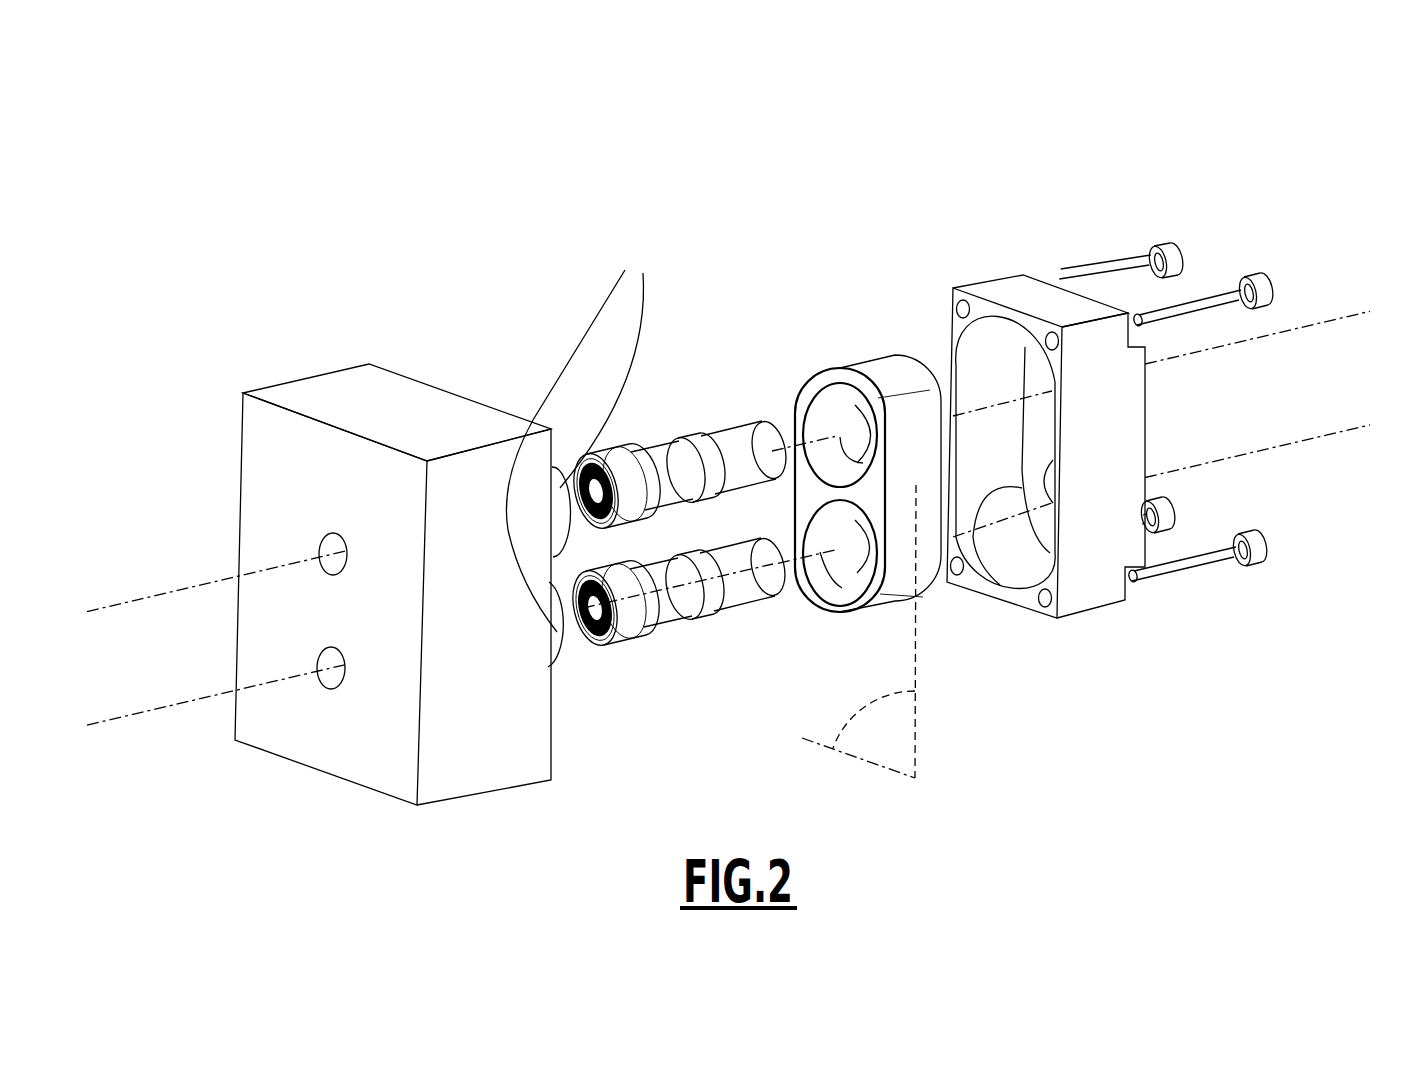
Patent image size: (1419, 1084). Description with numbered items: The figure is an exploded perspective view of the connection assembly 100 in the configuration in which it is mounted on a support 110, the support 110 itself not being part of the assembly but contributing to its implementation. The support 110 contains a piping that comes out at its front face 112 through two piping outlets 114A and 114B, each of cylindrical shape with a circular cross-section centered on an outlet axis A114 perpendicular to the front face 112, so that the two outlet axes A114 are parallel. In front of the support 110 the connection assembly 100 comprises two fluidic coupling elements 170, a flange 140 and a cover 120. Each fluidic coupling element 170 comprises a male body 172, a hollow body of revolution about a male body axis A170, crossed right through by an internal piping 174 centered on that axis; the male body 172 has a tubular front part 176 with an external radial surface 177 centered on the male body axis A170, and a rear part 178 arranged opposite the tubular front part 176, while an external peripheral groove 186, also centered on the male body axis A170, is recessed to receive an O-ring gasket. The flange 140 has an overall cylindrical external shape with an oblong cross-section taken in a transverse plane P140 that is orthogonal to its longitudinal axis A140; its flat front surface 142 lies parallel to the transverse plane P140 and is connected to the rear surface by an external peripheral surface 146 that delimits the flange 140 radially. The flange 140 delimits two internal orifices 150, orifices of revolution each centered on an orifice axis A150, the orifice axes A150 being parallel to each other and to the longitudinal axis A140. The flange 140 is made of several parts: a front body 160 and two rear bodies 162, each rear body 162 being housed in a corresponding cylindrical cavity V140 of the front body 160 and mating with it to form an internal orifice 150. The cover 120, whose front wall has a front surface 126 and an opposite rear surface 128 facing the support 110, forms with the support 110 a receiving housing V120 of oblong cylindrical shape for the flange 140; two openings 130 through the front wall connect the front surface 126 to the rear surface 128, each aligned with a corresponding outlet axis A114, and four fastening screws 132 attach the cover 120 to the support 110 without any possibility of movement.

The connection assembly 100 is at (515, 155).
The support 110 is at (312, 394).
The front face 112 is at (414, 374).
The piping outlet 114A is at (315, 549).
The piping outlet 114B is at (315, 660).
The outlet axis A114 is at (700, 526).
The cover 120 is at (1020, 283).
The front surface 126 is at (1150, 422).
The rear surface 128 is at (1037, 430).
The openings 130 is at (963, 575).
The fastening screws 132 is at (1257, 280).
The flange 140 is at (593, 233).
The front surface 142 is at (908, 357).
The external peripheral surface 146 is at (885, 370).
The internal orifices 150 is at (858, 422).
The front body 160 is at (850, 354).
The rear bodies 162 is at (582, 449).
The fluidic coupling elements 170 is at (663, 577).
The male body 172 is at (608, 707).
The internal piping 174 is at (585, 640).
The tubular front part 176 is at (667, 603).
The external radial surface 177 is at (670, 453).
The rear part 178 is at (637, 613).
The external peripheral groove 186 is at (628, 460).
The longitudinal axis A140 is at (840, 615).
The orifice axis A150 is at (864, 449).
The male body axis A170 is at (797, 607).
The transverse plane P140 is at (859, 631).
The receiving housing V120 is at (978, 373).
The cylindrical cavity V140 is at (813, 397).